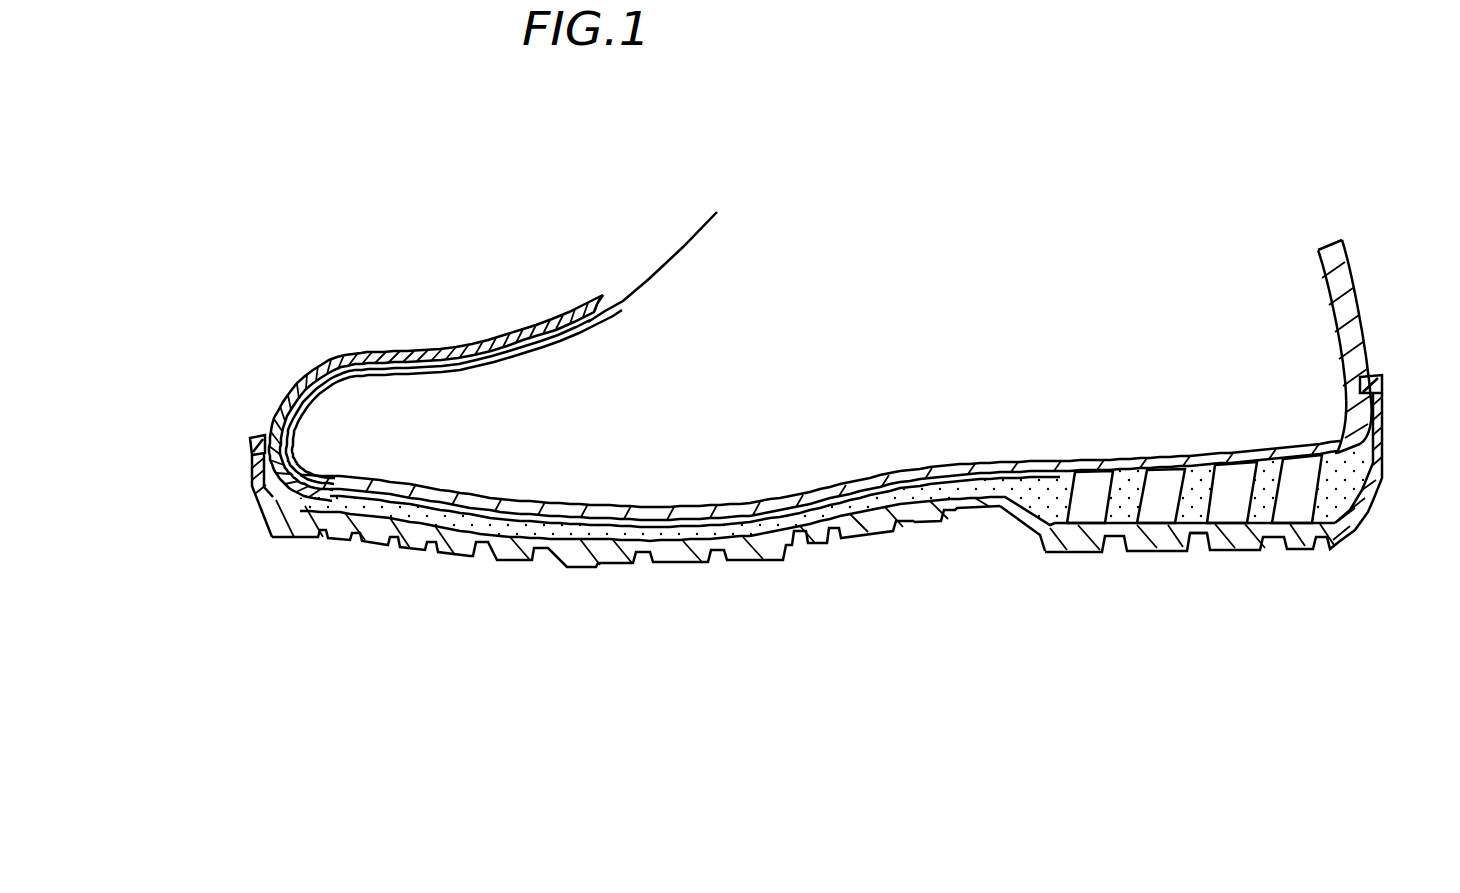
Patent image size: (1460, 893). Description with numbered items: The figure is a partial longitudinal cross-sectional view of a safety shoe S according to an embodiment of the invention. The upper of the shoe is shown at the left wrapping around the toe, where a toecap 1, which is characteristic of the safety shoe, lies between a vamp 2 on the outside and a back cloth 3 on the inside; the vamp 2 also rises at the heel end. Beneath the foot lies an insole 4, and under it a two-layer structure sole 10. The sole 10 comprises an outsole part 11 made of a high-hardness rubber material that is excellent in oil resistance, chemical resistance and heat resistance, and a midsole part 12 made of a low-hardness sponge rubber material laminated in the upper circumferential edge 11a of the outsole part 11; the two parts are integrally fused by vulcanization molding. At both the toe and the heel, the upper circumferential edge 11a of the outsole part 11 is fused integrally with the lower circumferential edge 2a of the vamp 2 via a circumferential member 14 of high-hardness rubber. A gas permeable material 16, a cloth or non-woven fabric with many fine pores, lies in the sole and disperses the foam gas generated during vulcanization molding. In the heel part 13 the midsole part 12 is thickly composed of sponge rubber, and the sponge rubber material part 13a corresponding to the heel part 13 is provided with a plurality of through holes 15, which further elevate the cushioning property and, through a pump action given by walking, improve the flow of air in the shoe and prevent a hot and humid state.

The safety shoe S is at (636, 249).
The toecap 1 is at (356, 368).
The vamp 2 is at (447, 347).
The lower circumferential edge of the vamp 2a is at (272, 423).
The back cloth 3 is at (385, 382).
The insole 4 is at (953, 467).
The two-layer structure sole 10 is at (777, 559).
The outsole part 11 is at (682, 553).
The upper circumferential edge of the outsole part 11a is at (252, 466).
The midsole part 12 is at (1043, 487).
The heel part 13 is at (1252, 548).
The sponge rubber material part 13a is at (1196, 515).
The circumferential member 14 is at (252, 447).
The through holes 15 is at (1095, 475).
The gas permeable material 16 is at (851, 490).